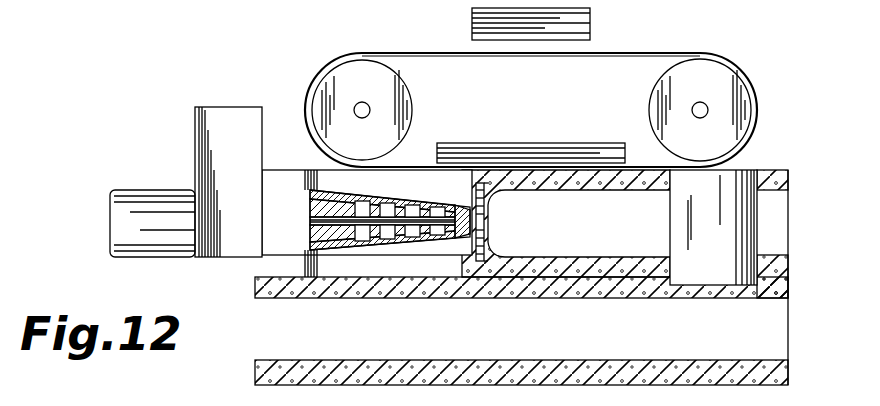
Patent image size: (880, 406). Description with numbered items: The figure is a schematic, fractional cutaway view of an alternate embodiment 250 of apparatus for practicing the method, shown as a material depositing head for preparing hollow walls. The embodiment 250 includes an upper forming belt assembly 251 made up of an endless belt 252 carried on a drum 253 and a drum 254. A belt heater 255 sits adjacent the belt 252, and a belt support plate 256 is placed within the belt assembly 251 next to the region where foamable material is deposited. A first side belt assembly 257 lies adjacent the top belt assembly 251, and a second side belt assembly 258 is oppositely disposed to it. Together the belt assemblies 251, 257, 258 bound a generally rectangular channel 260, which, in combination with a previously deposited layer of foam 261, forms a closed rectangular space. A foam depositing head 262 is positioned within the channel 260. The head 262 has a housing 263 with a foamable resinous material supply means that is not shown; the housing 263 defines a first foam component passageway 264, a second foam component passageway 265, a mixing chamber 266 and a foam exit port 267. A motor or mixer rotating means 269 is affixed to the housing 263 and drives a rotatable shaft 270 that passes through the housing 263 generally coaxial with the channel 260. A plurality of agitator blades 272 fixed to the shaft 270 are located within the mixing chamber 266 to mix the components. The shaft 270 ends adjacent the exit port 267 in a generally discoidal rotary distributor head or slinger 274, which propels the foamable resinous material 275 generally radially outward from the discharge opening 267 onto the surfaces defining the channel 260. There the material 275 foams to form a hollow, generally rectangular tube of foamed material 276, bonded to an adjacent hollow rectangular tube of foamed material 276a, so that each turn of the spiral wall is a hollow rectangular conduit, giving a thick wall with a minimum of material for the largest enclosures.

The alternate embodiment 250 is at (268, 88).
The upper forming belt assembly 251 is at (430, 49).
The endless belt 252 is at (353, 56).
The drum 253 is at (405, 95).
The drum 254 is at (727, 80).
The belt heater 255 is at (594, 22).
The belt support plate 256 is at (555, 143).
The first side belt assembly 257 is at (320, 176).
The second side belt assembly 258 is at (746, 168).
The rectangular channel 260 is at (400, 195).
The previously deposited layer of foam 261 is at (511, 290).
The foam depositing head 262 is at (259, 262).
The housing 263 is at (213, 108).
The first foam component passageway 264 is at (318, 252).
The second foam component passageway 265 is at (345, 203).
The mixing chamber 266 is at (366, 252).
The foam exit port 267 is at (466, 250).
The motor or mixer rotating means 269 is at (152, 192).
The rotatable shaft 270 is at (312, 214).
The agitator blades 272 is at (412, 250).
The rotary distributor head or slinger 274 is at (488, 228).
The foamable resinous material 275 is at (482, 180).
The hollow rectangular tube of foamed material 276 is at (605, 185).
The adjacent hollow rectangular tube of foamed material 276a is at (630, 339).